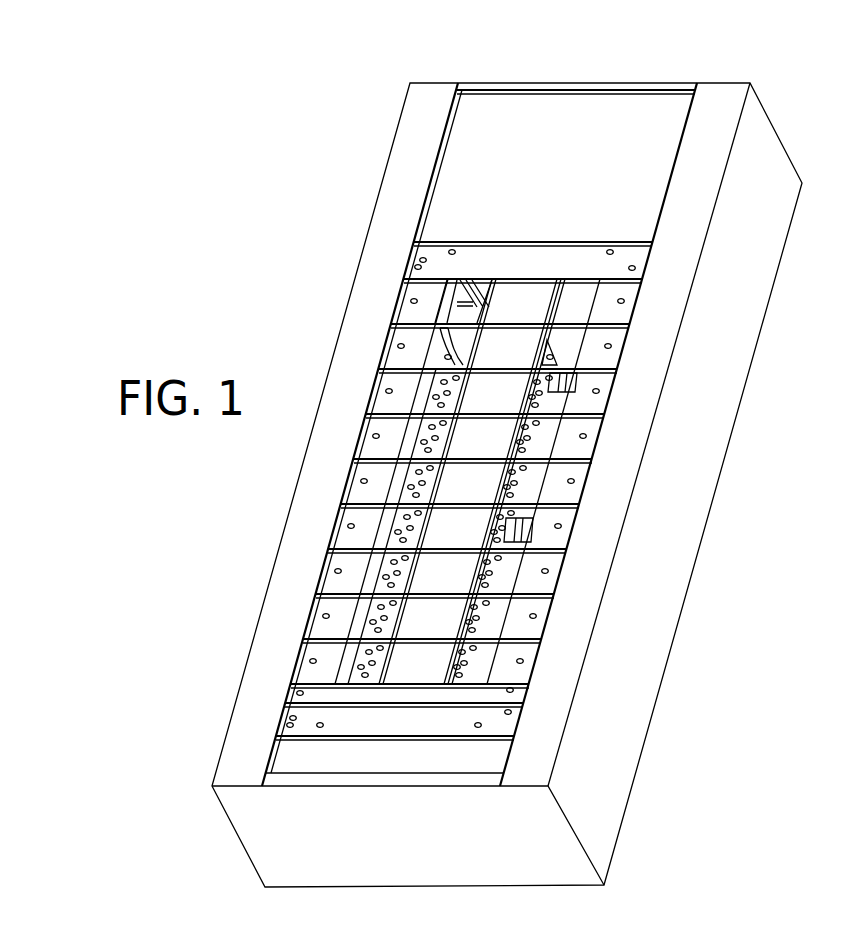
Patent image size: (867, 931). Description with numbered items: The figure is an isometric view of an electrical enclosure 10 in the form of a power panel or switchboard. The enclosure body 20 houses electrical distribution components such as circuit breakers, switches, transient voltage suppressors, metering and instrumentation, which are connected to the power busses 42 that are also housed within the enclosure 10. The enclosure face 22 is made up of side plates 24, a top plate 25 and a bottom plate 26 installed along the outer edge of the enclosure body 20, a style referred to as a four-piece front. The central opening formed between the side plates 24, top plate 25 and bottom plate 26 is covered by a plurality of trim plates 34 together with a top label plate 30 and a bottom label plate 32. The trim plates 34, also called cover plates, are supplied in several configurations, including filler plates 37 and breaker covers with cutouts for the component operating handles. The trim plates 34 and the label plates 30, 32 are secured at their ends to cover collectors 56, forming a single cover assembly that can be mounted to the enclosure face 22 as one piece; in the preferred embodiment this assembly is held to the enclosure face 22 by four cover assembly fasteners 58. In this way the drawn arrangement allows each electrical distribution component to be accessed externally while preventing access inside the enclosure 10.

The electrical enclosure 10 is at (829, 822).
The enclosure body 20 is at (270, 835).
The enclosure face 22 is at (402, 174).
The side plates 24 is at (695, 173).
The top plate 25 is at (630, 130).
The bottom plate 26 is at (305, 751).
The top label plate 30 is at (548, 265).
The bottom label plate 32 is at (335, 712).
The trim plates 34 is at (570, 448).
The filler plates 37 is at (477, 693).
The power busses 42 is at (578, 300).
The cover collectors 56 is at (412, 310).
The cover assembly fasteners 58 is at (612, 253).